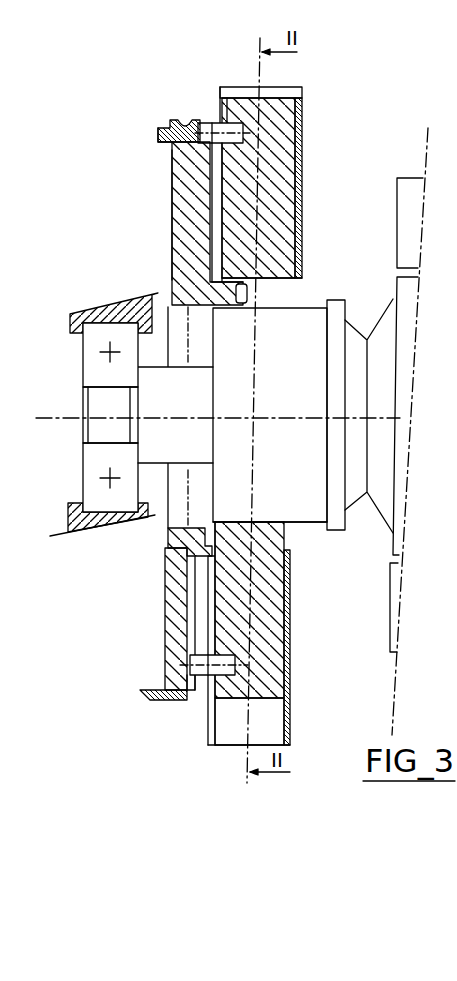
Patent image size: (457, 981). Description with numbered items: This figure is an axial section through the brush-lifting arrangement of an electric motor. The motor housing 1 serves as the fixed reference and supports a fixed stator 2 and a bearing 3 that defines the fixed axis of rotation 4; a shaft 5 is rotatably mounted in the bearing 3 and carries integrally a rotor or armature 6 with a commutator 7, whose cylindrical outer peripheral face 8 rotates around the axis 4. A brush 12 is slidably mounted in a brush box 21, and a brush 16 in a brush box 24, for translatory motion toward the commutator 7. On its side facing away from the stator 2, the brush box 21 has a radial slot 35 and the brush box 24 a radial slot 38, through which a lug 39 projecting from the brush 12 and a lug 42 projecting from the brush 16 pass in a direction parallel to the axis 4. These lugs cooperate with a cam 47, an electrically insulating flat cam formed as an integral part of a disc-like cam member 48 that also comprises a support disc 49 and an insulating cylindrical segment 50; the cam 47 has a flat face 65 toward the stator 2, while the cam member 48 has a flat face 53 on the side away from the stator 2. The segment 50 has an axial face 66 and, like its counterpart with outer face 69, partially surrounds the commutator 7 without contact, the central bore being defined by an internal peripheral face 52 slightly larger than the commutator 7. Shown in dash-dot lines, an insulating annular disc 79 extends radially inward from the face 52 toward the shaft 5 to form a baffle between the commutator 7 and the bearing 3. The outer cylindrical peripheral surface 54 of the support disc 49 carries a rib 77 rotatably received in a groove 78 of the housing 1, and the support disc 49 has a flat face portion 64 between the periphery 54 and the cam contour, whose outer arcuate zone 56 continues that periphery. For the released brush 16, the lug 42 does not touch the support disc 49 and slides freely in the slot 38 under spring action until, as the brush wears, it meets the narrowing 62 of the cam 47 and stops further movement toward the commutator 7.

The motor housing 1 is at (82, 533).
The stator 2 is at (390, 602).
The bearing 3 is at (83, 473).
The axis of rotation 4 is at (38, 420).
The shaft 5 is at (83, 397).
The rotor or armature 6 is at (384, 316).
The commutator 7 is at (307, 517).
The cylindrical outer peripheral face 8 is at (298, 307).
The brush 12 is at (275, 178).
The brush 16 is at (267, 673).
The brush box 21 is at (303, 120).
The brush box 24 is at (268, 718).
The slot 35 is at (222, 102).
The slot 38 is at (208, 740).
The lug 39 is at (198, 127).
The lug 42 is at (195, 680).
The cam 47 is at (190, 533).
The cam member 48 is at (172, 178).
The support disc 49 is at (165, 660).
The cylindrical segment 50 is at (234, 308).
The internal peripheral face 52 is at (200, 307).
The flat face 53 is at (165, 610).
The outer cylindrical peripheral surface 54 is at (150, 697).
The outer arcuate zone 56 is at (172, 123).
The narrowing 62 is at (200, 562).
The flat face portion 64 is at (192, 585).
The flat face 65 is at (190, 527).
The axial face 66 is at (248, 298).
The outer face 69 is at (237, 285).
The rib 77 is at (170, 188).
The groove 78 is at (158, 132).
The annular disc 79 is at (180, 380).